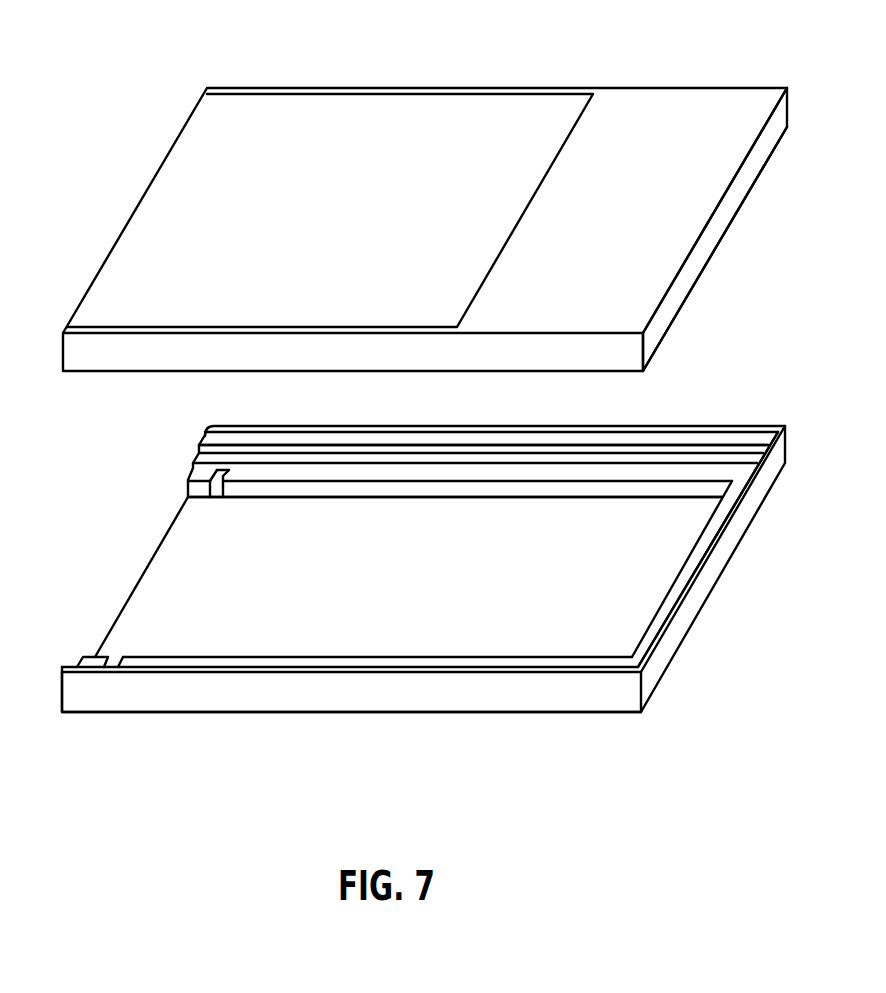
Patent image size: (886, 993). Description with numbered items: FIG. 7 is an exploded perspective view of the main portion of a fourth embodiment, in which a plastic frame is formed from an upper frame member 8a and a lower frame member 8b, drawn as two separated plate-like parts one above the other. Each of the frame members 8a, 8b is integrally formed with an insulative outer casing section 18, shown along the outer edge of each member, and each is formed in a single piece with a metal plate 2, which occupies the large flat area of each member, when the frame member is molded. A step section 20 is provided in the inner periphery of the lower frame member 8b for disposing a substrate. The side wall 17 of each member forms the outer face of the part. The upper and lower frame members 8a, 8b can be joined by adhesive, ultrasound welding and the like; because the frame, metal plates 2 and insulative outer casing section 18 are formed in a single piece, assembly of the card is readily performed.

The upper frame member 8a is at (700, 68).
The lower frame member 8b is at (547, 726).
The metal plate 2 is at (158, 225).
The side wall 17 is at (697, 260).
The insulative outer casing section 18 is at (722, 167).
The step section 20 is at (397, 472).